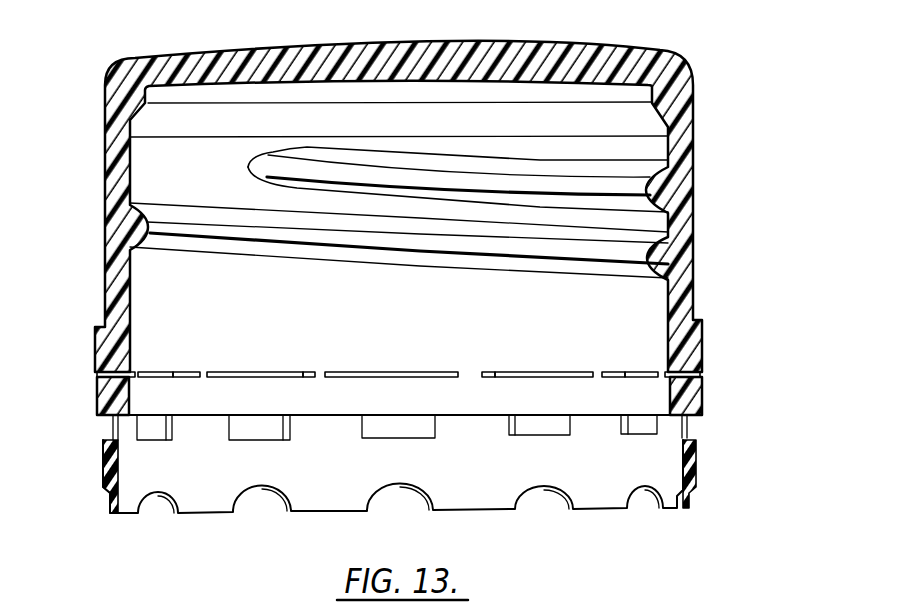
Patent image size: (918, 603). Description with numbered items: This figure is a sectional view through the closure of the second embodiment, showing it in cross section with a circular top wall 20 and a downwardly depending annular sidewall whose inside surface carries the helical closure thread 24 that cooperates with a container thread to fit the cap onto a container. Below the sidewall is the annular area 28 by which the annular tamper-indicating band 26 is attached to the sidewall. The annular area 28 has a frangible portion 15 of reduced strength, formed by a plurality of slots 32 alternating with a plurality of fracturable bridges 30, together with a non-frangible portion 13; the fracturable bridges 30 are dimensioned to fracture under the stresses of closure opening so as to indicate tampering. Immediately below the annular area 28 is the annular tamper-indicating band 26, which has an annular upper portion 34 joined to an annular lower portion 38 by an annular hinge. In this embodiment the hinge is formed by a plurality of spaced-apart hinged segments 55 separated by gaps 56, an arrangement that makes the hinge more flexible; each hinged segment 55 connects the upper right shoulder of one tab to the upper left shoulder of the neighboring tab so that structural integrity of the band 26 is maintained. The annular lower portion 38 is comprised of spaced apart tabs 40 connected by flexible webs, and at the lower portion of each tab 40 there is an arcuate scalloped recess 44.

The top wall 20 is at (447, 65).
The closure thread 24 is at (673, 191).
The annular upper portion 34 is at (705, 398).
The annular area 28 is at (730, 367).
The fracturable bridges 30 is at (205, 372).
The slots 32 is at (263, 372).
The frangible portion 15 is at (356, 366).
The non-frangible portion 13 is at (474, 366).
The annular tamper-indicating band 26 is at (726, 422).
The annular lower portion 38 is at (728, 456).
The tabs 40 is at (103, 466).
The gaps 56 is at (262, 432).
The hinged segments 55 is at (325, 427).
The scalloped recess 44 is at (690, 500).